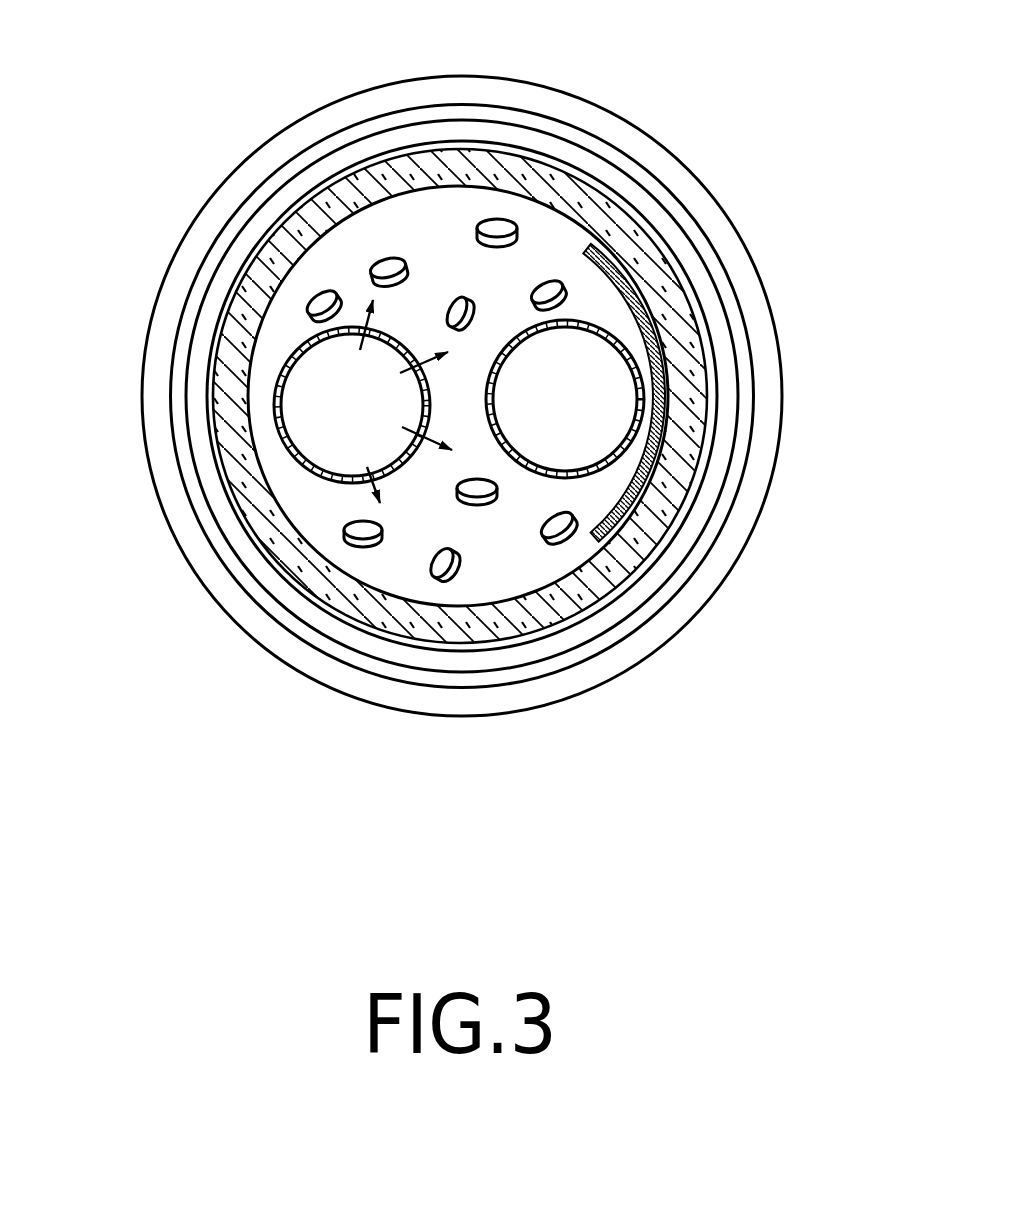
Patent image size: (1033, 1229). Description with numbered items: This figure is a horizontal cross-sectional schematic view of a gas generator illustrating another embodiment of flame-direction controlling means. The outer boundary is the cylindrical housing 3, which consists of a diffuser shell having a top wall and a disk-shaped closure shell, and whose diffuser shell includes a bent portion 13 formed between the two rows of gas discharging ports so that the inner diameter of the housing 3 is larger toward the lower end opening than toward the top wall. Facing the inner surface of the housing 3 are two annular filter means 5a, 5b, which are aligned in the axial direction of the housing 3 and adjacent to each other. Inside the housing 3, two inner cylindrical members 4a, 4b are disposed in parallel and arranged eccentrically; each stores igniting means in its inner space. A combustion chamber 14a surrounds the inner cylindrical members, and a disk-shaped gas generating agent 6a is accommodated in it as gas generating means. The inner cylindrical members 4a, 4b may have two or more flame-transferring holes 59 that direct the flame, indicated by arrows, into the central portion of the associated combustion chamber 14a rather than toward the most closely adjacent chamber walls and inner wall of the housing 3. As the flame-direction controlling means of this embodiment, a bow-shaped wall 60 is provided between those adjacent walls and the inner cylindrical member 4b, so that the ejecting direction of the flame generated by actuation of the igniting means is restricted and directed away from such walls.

The cylindrical housing 3 is at (757, 363).
The bent portion 13 is at (745, 433).
The filter means 5a is at (233, 510).
The filter means 5b is at (230, 443).
The bow-shaped wall 60 is at (617, 278).
The inner cylindrical member 4a is at (277, 363).
The inner cylindrical member 4b is at (572, 477).
The flame-transferring holes 59 is at (380, 478).
The gas generating agent 6a is at (497, 222).
The combustion chamber 14a is at (433, 243).